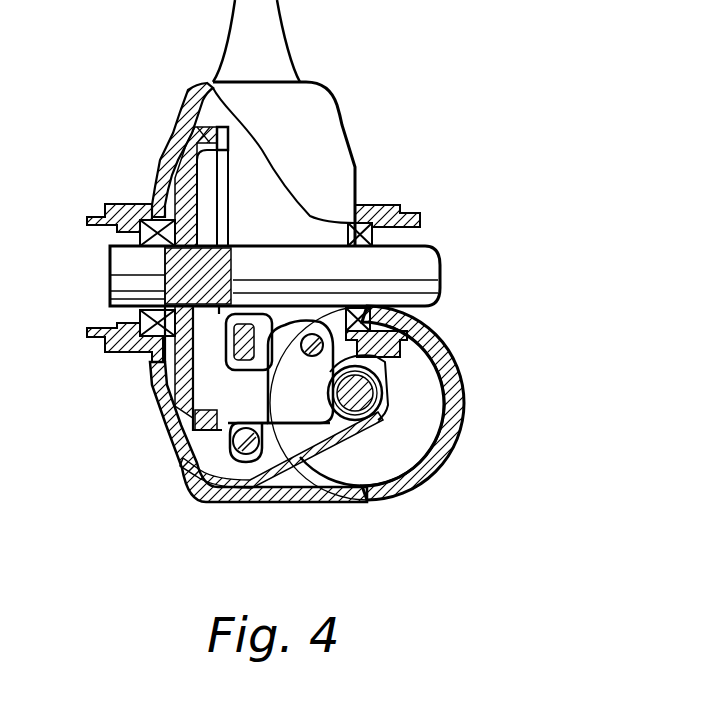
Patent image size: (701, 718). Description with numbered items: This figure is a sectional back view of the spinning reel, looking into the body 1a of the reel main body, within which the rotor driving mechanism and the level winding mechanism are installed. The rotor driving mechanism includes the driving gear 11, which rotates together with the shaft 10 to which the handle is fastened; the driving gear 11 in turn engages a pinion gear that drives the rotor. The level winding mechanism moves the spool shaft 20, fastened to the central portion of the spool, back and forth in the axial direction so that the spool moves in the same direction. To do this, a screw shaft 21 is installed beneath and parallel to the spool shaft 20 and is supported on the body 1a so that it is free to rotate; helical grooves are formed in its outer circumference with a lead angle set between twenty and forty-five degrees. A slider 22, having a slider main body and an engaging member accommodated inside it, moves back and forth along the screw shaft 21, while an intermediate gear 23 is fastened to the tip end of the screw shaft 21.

The body 1a is at (167, 167).
The shaft 10 is at (413, 267).
The driving gear 11 is at (207, 140).
The spool shaft 20 is at (230, 348).
The screw shaft 21 is at (387, 415).
The slider 22 is at (308, 405).
The intermediate gear 23 is at (415, 388).